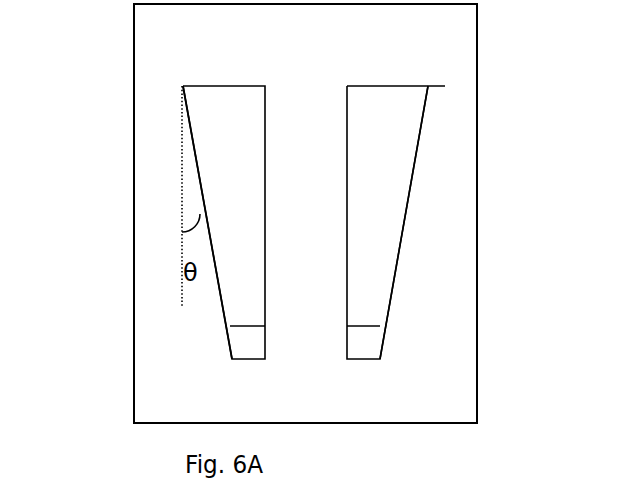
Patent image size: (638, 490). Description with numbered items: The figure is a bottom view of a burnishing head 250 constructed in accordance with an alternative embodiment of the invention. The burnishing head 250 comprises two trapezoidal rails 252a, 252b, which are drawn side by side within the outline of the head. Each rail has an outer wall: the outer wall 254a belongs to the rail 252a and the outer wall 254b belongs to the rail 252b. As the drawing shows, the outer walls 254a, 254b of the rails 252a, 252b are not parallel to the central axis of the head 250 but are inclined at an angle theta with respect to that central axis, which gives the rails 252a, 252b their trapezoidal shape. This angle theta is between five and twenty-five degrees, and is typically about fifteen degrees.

The burnishing head 250 is at (506, 64).
The trapezoidal rail 252a is at (248, 105).
The trapezoidal rail 252b is at (411, 176).
The outer wall 254a is at (170, 114).
The outer wall 254b is at (426, 227).